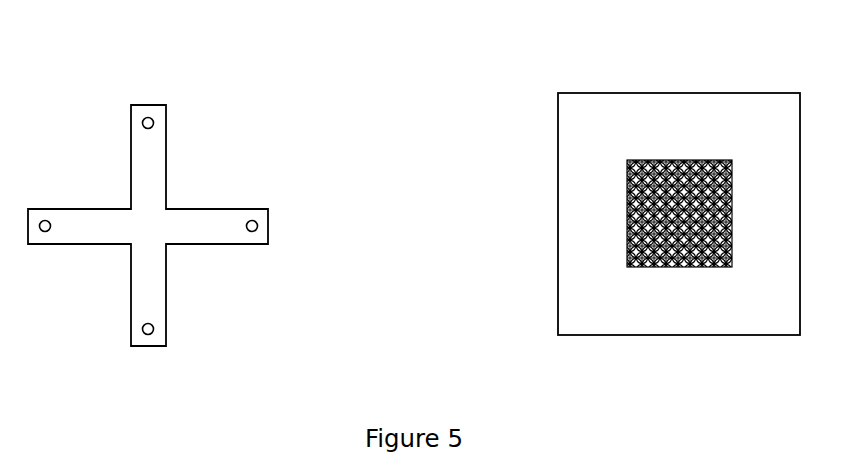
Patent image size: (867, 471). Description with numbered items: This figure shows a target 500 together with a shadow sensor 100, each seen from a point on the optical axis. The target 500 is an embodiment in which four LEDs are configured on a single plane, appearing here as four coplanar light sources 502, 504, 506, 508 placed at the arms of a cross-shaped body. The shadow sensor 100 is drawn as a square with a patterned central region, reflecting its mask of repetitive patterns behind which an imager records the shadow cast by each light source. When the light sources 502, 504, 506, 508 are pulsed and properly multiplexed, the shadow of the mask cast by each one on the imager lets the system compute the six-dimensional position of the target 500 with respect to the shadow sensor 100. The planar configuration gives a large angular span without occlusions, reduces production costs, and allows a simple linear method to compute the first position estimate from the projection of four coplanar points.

The shadow sensor 100 is at (568, 168).
The target 500 is at (257, 157).
The coplanar light source 502 is at (257, 224).
The coplanar light source 504 is at (153, 332).
The coplanar light source 506 is at (49, 222).
The coplanar light source 508 is at (152, 119).